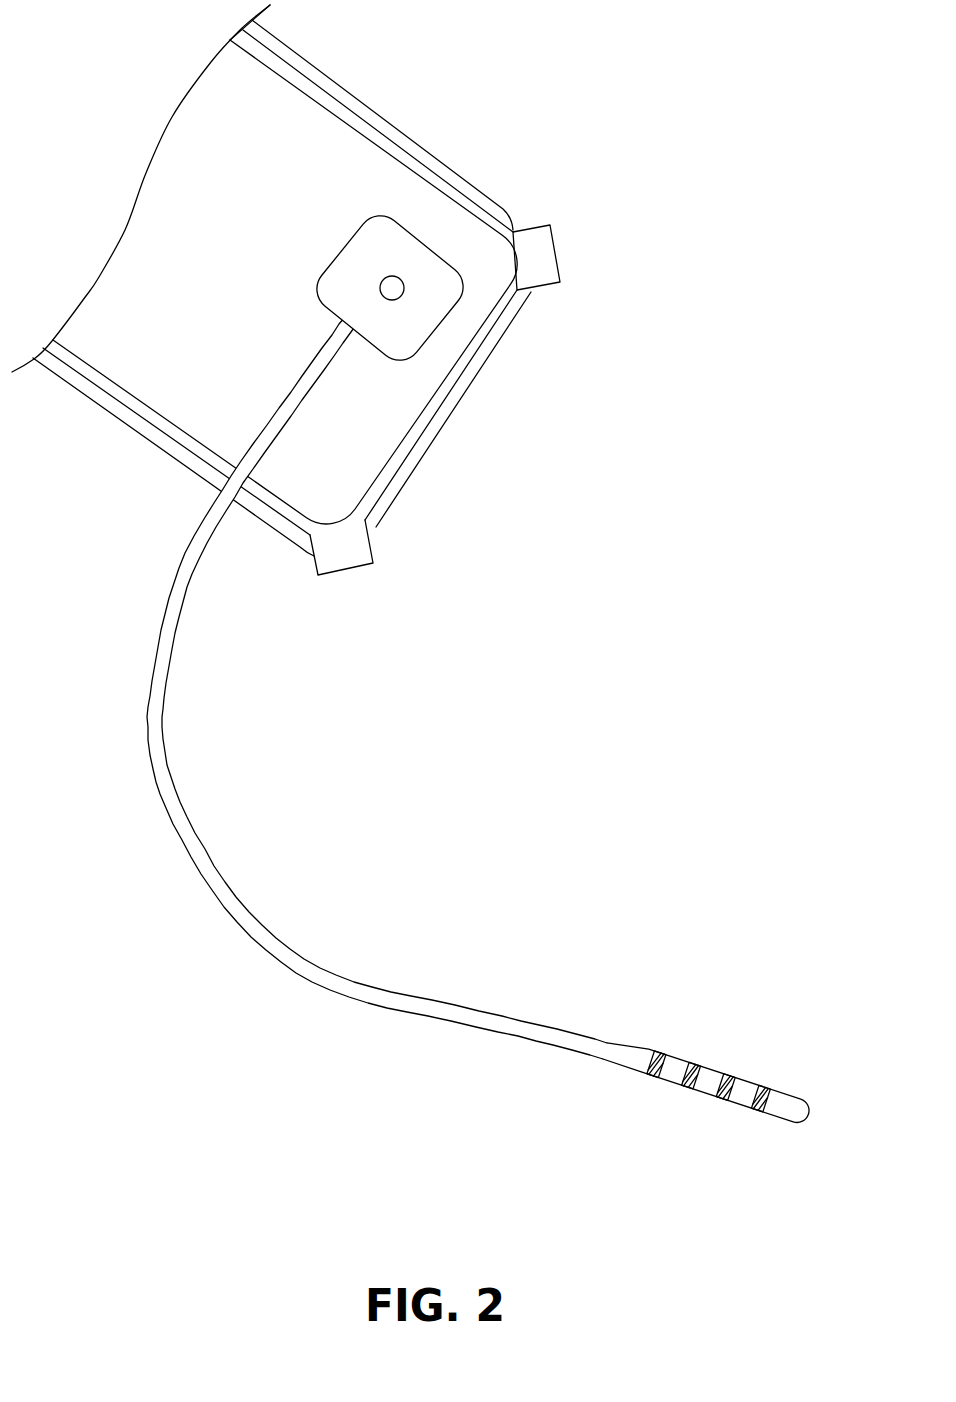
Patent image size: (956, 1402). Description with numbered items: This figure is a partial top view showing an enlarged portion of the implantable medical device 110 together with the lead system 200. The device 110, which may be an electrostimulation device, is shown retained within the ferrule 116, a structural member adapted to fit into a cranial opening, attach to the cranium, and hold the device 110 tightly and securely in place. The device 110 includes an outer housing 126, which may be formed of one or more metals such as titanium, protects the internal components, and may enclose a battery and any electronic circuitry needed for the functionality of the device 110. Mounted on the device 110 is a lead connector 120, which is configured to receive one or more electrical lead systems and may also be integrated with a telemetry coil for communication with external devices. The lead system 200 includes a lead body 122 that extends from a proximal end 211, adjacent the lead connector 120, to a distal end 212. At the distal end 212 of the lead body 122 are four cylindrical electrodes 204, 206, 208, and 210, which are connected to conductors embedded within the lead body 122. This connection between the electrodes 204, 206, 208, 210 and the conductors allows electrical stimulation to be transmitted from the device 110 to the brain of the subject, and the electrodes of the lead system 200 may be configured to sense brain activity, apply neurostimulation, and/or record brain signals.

The implantable medical device 110 is at (286, 290).
The ferrule 116 is at (381, 511).
The lead connector 120 is at (425, 282).
The lead body 122 is at (189, 558).
The outer housing 126 is at (396, 464).
The lead system 200 is at (465, 742).
The electrode 204 is at (657, 1052).
The electrode 206 is at (690, 1062).
The electrode 208 is at (723, 1093).
The electrode 210 is at (760, 1107).
The proximal end 211 is at (351, 346).
The distal end 212 is at (718, 1081).